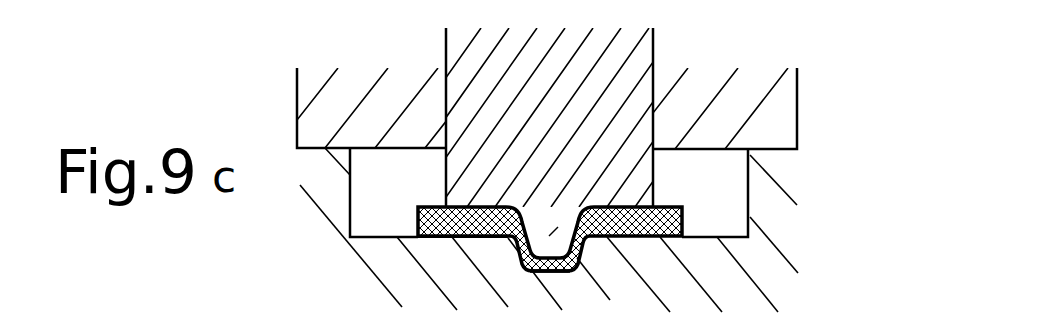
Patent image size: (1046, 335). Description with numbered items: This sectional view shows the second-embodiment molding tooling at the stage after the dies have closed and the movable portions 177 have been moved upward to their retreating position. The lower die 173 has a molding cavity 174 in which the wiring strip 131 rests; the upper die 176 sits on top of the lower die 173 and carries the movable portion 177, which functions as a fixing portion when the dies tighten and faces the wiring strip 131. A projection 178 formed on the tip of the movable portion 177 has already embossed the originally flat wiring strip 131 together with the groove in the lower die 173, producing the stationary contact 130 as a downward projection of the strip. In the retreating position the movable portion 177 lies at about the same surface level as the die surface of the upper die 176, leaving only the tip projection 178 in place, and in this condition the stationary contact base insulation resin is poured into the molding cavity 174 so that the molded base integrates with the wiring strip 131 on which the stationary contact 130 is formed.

The stationary contact 130 is at (538, 272).
The wiring strip 131 is at (434, 237).
The lower die 173 is at (777, 215).
The molding cavity 174 is at (385, 192).
The upper die 176 is at (777, 120).
The movable portion 177 is at (640, 78).
The projection 178 is at (550, 267).